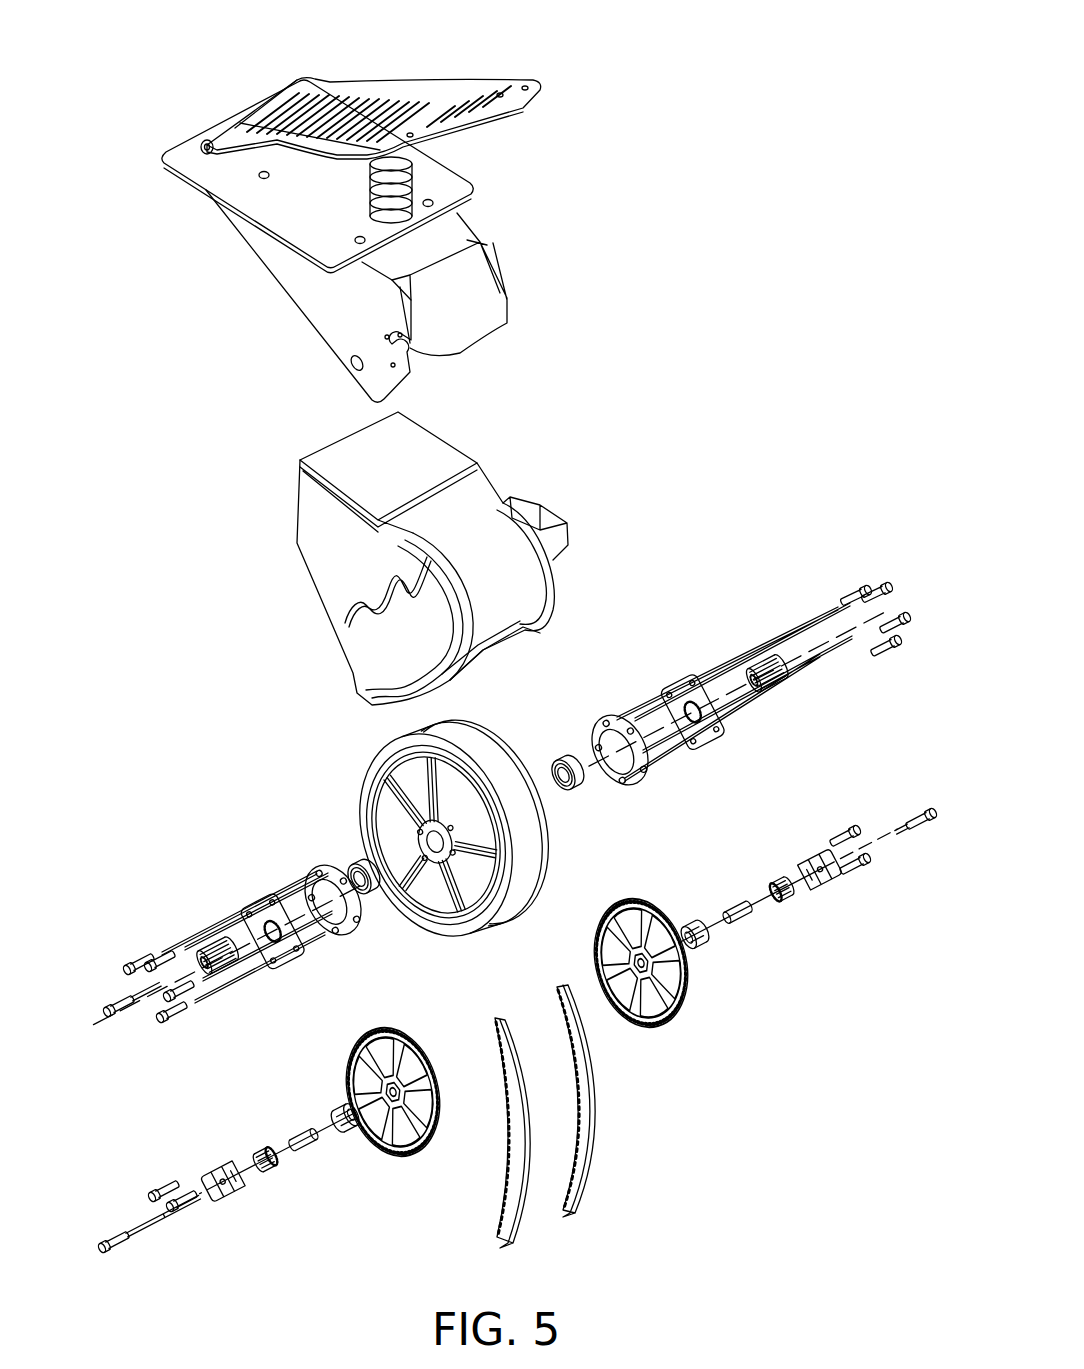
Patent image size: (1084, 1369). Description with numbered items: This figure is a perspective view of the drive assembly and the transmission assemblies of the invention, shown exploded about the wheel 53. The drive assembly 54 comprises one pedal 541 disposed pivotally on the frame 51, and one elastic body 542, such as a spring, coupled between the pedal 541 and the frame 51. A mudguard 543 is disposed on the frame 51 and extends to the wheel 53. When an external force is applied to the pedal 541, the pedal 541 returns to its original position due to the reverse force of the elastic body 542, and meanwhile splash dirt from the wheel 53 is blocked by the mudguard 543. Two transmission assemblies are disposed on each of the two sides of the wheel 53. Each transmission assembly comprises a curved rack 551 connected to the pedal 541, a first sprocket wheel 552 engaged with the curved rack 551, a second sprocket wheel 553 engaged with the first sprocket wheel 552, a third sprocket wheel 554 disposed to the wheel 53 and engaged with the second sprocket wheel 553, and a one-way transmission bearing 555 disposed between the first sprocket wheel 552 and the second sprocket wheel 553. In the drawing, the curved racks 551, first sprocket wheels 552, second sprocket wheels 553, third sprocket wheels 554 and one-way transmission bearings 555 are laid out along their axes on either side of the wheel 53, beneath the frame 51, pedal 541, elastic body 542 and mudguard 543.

The frame 51 is at (195, 163).
The wheel 53 is at (538, 870).
The drive assembly 54 is at (220, 121).
The pedal 541 is at (503, 87).
The elastic body 542 is at (416, 168).
The mudguard 543 is at (478, 500).
The curved rack 551 is at (582, 1147).
The first sprocket wheel 552 is at (787, 903).
The second sprocket wheel 553 is at (655, 1022).
The third sprocket wheel 554 is at (770, 687).
The one-way transmission bearing 555 is at (707, 962).